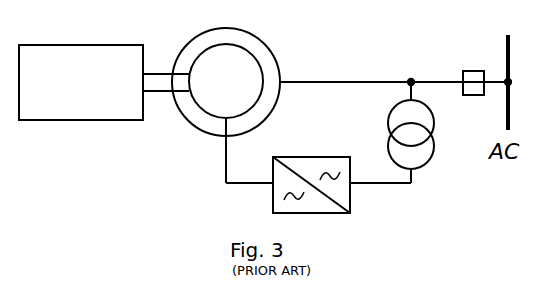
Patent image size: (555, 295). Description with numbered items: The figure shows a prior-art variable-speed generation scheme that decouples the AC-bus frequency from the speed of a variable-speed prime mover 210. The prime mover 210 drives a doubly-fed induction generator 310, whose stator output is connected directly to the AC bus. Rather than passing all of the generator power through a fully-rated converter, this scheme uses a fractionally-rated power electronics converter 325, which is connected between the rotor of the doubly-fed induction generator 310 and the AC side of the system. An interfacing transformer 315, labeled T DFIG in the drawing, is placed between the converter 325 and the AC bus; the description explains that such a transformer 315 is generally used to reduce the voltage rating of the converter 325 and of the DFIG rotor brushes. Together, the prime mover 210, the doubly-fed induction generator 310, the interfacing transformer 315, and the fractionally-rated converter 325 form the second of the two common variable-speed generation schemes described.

The variable-speed prime mover 210 is at (83, 40).
The doubly-fed induction generator 310 is at (262, 33).
The transformer 315 is at (383, 114).
The fractionally-rated power electronics converter 325 is at (333, 218).